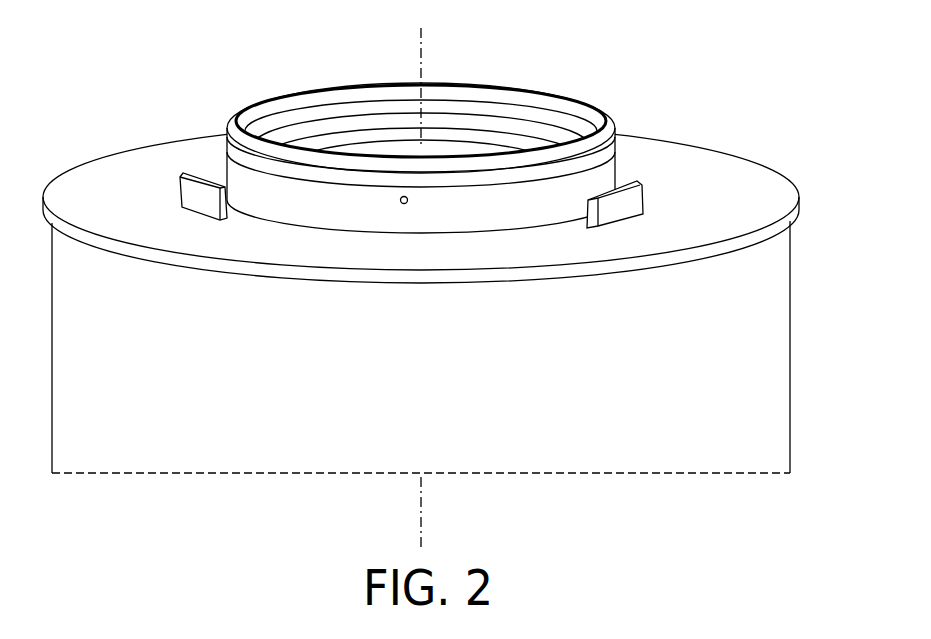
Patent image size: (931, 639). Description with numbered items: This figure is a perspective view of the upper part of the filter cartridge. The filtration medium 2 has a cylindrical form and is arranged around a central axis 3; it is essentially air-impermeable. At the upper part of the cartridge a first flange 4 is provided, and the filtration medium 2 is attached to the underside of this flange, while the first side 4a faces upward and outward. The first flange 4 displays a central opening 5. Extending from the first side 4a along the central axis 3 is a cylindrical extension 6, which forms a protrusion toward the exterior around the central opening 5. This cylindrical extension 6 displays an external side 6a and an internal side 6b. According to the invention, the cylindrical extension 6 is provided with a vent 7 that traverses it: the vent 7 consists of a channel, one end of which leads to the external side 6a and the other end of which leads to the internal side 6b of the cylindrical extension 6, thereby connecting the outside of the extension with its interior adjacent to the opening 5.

The filtration medium 2 is at (755, 383).
The central axis 3 is at (420, 275).
The first flange 4 is at (808, 205).
The first side 4a is at (763, 183).
The opening 5 is at (479, 133).
The cylindrical extension 6 is at (300, 211).
The external side 6a is at (603, 182).
The internal side 6b is at (540, 132).
The vent 7 is at (396, 187).